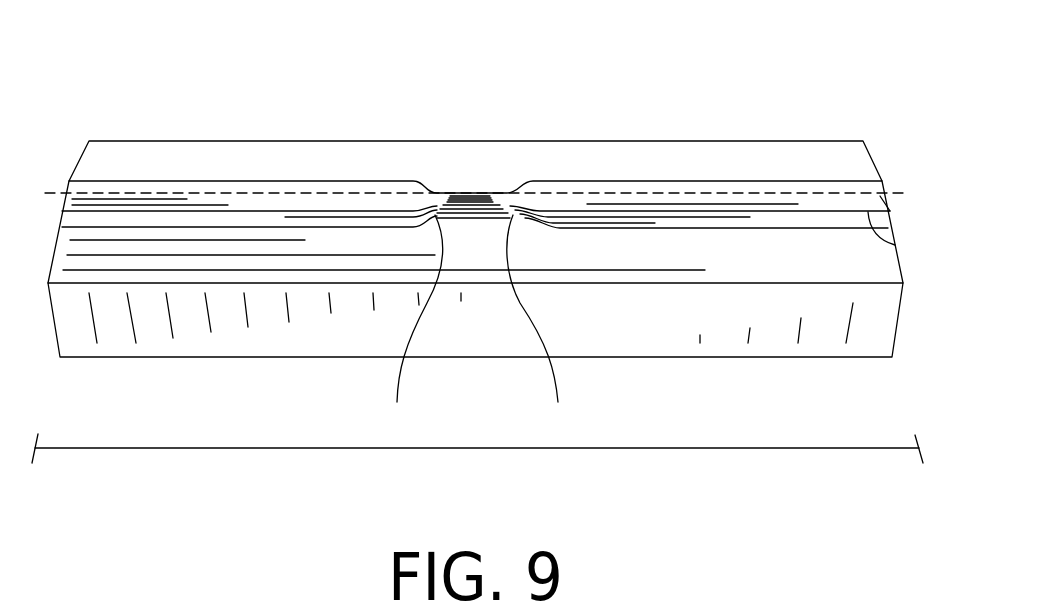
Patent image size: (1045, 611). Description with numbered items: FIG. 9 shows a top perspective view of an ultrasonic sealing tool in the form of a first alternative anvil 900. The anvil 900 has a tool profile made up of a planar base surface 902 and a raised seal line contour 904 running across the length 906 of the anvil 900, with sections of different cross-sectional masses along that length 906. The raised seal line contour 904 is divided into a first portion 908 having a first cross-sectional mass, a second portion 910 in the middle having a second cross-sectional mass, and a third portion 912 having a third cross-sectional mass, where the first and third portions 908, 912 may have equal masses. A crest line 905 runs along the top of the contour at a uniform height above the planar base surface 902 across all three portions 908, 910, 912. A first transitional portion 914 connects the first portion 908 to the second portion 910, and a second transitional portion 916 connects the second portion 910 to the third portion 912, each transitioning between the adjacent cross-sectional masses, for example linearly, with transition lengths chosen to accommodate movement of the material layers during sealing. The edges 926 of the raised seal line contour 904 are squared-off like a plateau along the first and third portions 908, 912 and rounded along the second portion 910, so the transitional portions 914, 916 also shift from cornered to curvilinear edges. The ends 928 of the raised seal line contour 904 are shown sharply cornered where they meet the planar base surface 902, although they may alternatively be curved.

The anvil 900 is at (155, 67).
The planar base surface 902 is at (847, 152).
The raised seal line contour 904 is at (107, 199).
The crest line 905 is at (903, 193).
The length 906 is at (680, 449).
The first portion 908 is at (303, 190).
The second portion 910 is at (477, 203).
The third portion 912 is at (738, 211).
The first transitional portion 914 is at (410, 323).
The second transitional portion 916 is at (541, 323).
The edges 926 is at (893, 246).
The ends 928 is at (892, 202).